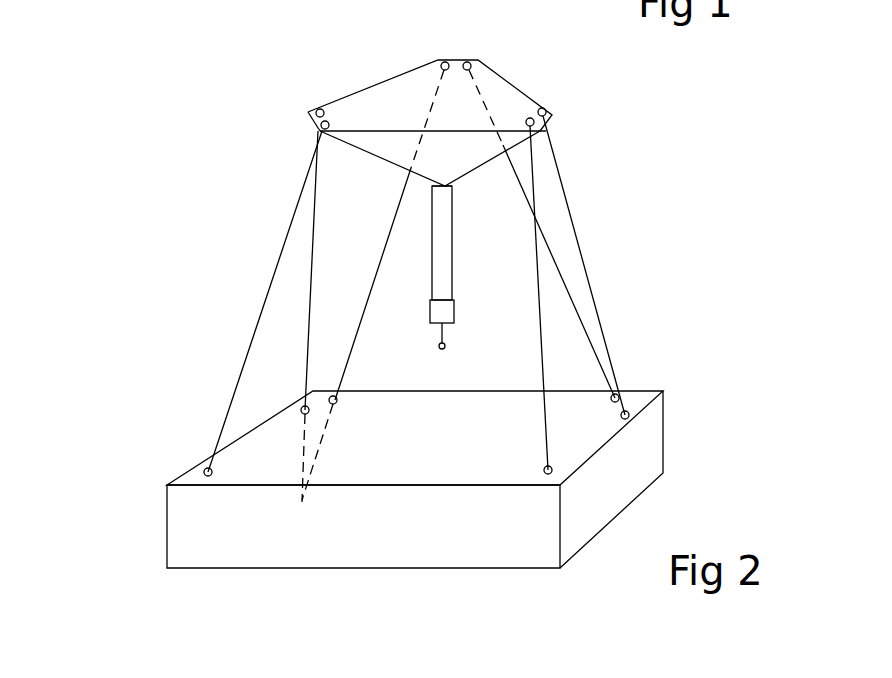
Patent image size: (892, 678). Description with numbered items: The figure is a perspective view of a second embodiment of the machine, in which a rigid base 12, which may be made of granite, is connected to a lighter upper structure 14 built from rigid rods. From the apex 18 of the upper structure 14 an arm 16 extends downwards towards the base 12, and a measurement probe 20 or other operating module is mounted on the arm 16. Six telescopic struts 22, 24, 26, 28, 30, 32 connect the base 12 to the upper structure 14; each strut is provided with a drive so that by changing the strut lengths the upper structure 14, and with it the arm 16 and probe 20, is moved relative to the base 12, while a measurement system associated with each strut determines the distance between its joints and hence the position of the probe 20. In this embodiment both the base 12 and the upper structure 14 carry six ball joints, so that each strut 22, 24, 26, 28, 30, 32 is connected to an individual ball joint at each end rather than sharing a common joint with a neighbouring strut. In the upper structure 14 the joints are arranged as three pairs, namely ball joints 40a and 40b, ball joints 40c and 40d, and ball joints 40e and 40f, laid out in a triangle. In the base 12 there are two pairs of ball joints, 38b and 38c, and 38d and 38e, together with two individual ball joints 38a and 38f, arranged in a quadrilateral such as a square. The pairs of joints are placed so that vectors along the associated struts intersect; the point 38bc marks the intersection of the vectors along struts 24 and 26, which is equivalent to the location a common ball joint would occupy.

The base 12 is at (182, 543).
The upper structure 14 is at (523, 107).
The arm 16 is at (452, 282).
The apex 18 is at (448, 187).
The measurement probe 20 is at (443, 316).
The strut 22 is at (247, 353).
The strut 24 is at (308, 317).
The strut 26 is at (369, 287).
The strut 28 is at (548, 250).
The strut 30 is at (585, 262).
The strut 32 is at (540, 366).
The ball joint 38a is at (205, 472).
The ball joint 38b is at (301, 410).
The ball joint 38c is at (338, 400).
The ball joint 38d is at (617, 394).
The ball joint 38e is at (630, 417).
The ball joint 38f is at (553, 471).
The point of intersection 38bc is at (303, 471).
The ball joint 40a is at (320, 131).
The ball joint 40b is at (317, 110).
The ball joint 40c is at (444, 61).
The ball joint 40d is at (462, 50).
The ball joint 40e is at (546, 113).
The ball joint 40f is at (537, 131).